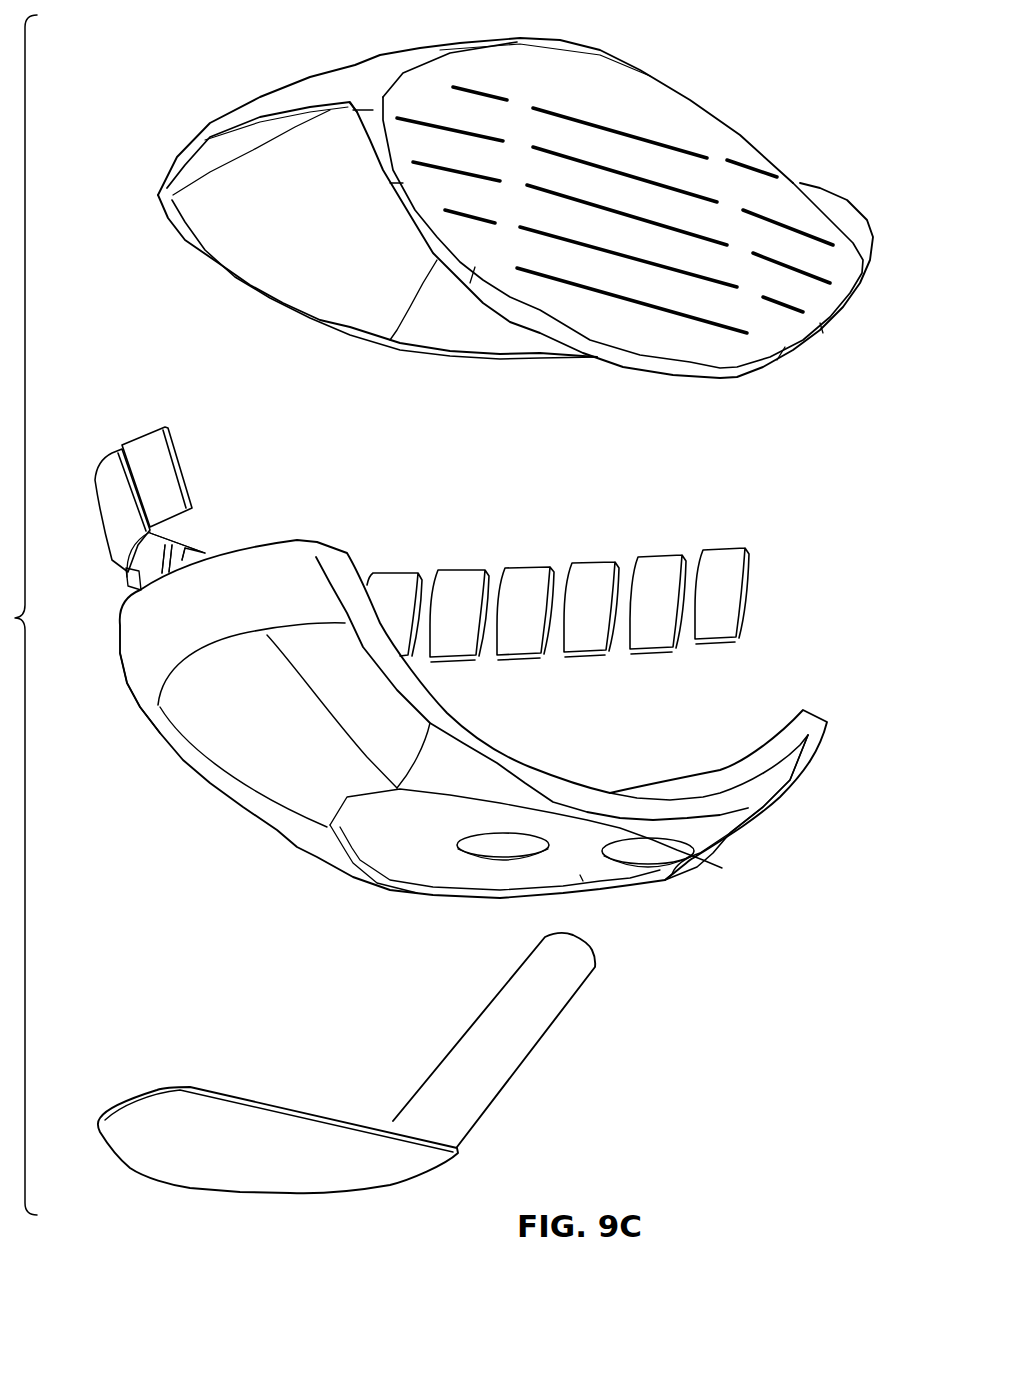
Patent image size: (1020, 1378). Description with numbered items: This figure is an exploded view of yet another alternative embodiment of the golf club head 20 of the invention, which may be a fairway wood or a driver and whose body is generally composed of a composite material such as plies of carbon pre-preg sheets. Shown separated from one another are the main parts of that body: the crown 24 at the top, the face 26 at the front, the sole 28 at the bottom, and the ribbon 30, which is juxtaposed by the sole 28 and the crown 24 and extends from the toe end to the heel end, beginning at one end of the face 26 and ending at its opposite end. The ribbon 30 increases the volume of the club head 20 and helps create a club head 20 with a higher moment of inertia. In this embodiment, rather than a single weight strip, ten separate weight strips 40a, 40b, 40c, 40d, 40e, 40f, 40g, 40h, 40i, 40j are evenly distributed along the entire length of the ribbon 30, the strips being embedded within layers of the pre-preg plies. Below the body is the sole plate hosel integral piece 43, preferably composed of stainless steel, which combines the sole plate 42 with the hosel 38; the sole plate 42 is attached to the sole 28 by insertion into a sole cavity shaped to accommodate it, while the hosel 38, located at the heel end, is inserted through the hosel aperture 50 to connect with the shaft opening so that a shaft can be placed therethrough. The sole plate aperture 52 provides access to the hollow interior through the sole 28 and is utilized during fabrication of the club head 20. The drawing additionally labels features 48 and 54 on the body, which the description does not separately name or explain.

The golf club head 20 is at (771, 487).
The crown 24 is at (307, 77).
The face 26 is at (720, 135).
The sole 28 is at (300, 855).
The ribbon 30 is at (137, 680).
The hosel 38 is at (470, 1037).
The weight strip 40a is at (747, 590).
The weight strip 40b is at (658, 562).
The weight strip 40c is at (593, 568).
The weight strip 40d is at (527, 572).
The weight strip 40e is at (460, 575).
The weight strip 40f is at (392, 577).
The weight strip 40g is at (197, 550).
The weight strip 40h is at (137, 588).
The weight strip 40i is at (97, 473).
The weight strip 40j is at (173, 447).
The sole plate 42 is at (338, 1187).
The sole plate hosel integral piece 43 is at (503, 1118).
The sole 48 is at (580, 877).
The hosel aperture 50 is at (657, 857).
The sole plate aperture 52 is at (490, 853).
The tab 54 is at (807, 737).